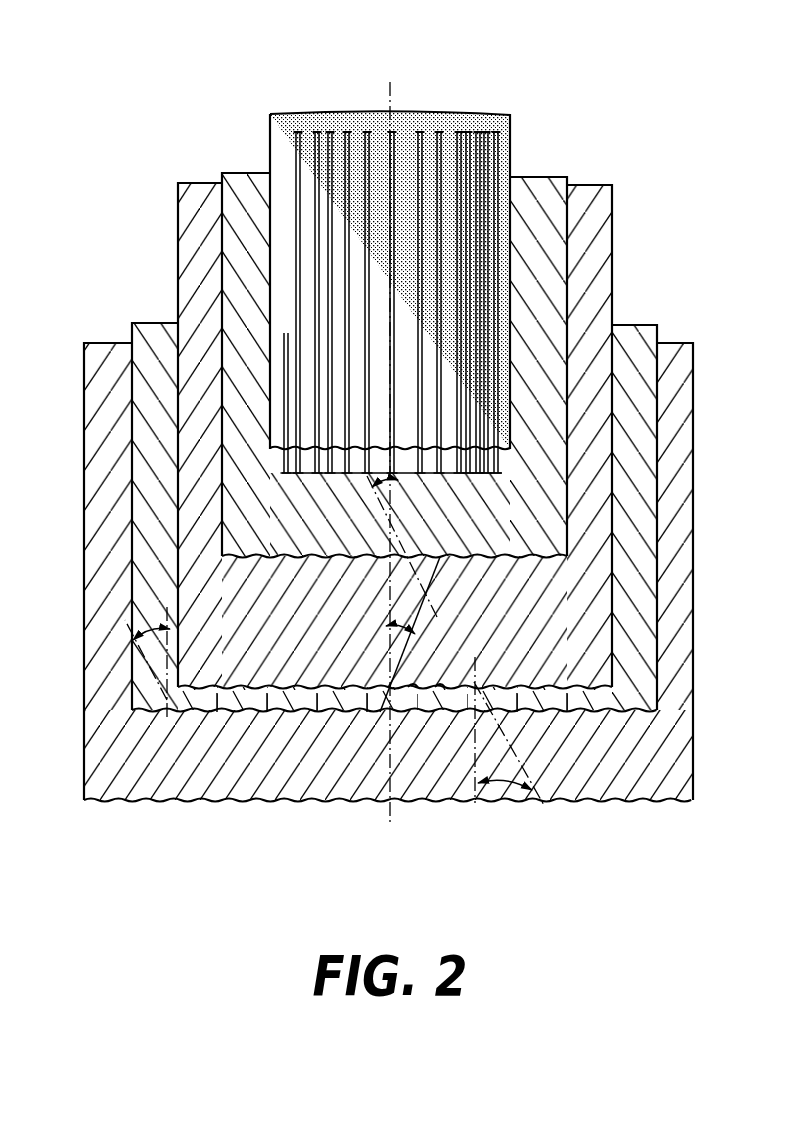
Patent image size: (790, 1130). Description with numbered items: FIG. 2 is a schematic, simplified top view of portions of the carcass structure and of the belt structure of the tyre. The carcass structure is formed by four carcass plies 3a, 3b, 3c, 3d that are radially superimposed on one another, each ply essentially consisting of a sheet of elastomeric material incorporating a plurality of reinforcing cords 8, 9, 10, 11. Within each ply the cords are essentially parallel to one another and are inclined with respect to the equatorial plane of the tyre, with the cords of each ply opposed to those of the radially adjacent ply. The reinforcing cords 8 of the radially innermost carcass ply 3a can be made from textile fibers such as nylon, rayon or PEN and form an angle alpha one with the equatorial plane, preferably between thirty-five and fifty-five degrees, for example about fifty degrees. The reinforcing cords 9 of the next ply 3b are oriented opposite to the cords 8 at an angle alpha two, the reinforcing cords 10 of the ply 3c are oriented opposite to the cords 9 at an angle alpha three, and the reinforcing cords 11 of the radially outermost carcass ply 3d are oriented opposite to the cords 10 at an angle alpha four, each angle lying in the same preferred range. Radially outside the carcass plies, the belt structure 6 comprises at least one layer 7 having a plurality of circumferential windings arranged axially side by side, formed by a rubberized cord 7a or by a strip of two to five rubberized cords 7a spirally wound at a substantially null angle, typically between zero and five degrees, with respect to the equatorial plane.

The radially innermost carcass ply 3a is at (183, 818).
The carcass ply 3b is at (205, 695).
The carcass ply 3c is at (559, 642).
The radially outermost carcass ply 3d is at (262, 187).
The belt structure 6 is at (347, 106).
The layer 7 is at (508, 108).
The rubberized cord 7a is at (400, 137).
The reinforcing cords 8 is at (275, 787).
The reinforcing cords 9 is at (224, 710).
The reinforcing cords 10 is at (441, 680).
The reinforcing cords 11 is at (241, 181).